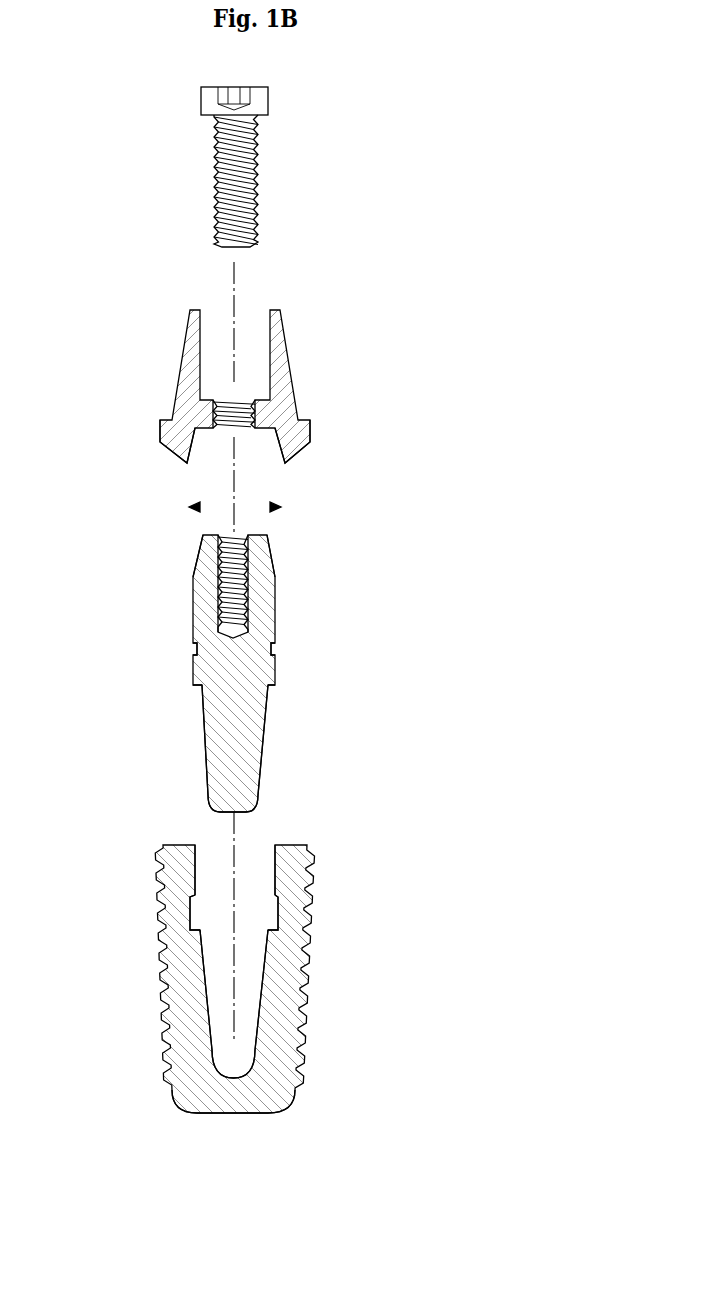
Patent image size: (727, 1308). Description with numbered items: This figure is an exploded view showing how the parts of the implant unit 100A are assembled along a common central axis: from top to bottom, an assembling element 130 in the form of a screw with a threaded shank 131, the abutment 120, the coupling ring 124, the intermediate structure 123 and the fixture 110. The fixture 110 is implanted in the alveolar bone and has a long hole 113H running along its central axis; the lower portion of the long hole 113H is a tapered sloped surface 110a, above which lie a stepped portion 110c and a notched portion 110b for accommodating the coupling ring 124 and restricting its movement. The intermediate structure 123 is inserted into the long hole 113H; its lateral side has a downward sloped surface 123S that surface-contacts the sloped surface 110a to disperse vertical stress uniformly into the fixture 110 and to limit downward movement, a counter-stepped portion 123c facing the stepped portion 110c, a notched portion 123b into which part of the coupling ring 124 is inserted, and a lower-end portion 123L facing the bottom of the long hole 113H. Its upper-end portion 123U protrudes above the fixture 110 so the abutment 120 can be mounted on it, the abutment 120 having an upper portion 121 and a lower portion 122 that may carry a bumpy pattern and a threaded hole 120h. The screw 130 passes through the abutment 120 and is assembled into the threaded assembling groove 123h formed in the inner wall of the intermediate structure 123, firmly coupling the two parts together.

The implant unit 100A is at (362, 176).
The assembling element 130 is at (201, 97).
The screw thread portion 131 is at (214, 211).
The abutment 120 is at (186, 399).
The upper portion of abutment 121 is at (270, 362).
The threaded hole of coupling member 120h is at (245, 402).
The lower portion of abutment 122 is at (282, 447).
The coupling ring 124 is at (282, 508).
The intermediate structure 123 is at (215, 732).
The assembling groove 123h is at (232, 536).
The upper-end portion of intermediate structure 123U is at (268, 558).
The notched portion of intermediate structure 123b is at (290, 648).
The counter-stepped portion 123c is at (290, 687).
The sloped surface of intermediate structure 123S is at (203, 738).
The lower-end portion of intermediate structure 123L is at (260, 793).
The fixture 110 is at (186, 1110).
The notched portion of long hole 110b is at (278, 894).
The stepped portion 110c is at (270, 945).
The sloped surface of long hole 110a is at (267, 966).
The long hole 113H is at (240, 1063).